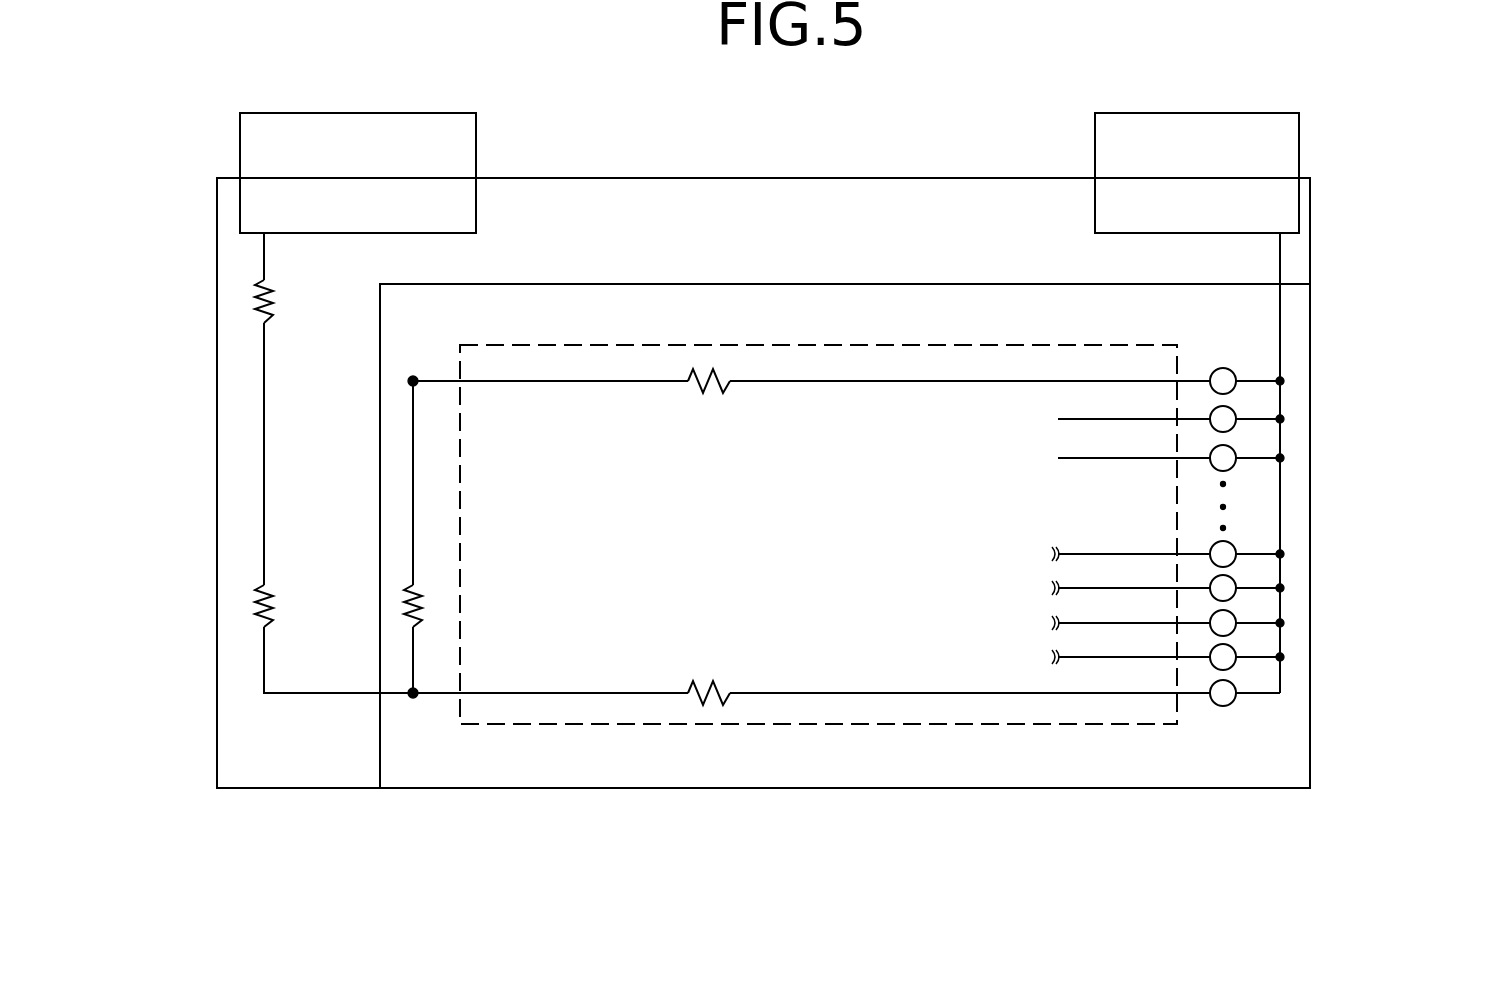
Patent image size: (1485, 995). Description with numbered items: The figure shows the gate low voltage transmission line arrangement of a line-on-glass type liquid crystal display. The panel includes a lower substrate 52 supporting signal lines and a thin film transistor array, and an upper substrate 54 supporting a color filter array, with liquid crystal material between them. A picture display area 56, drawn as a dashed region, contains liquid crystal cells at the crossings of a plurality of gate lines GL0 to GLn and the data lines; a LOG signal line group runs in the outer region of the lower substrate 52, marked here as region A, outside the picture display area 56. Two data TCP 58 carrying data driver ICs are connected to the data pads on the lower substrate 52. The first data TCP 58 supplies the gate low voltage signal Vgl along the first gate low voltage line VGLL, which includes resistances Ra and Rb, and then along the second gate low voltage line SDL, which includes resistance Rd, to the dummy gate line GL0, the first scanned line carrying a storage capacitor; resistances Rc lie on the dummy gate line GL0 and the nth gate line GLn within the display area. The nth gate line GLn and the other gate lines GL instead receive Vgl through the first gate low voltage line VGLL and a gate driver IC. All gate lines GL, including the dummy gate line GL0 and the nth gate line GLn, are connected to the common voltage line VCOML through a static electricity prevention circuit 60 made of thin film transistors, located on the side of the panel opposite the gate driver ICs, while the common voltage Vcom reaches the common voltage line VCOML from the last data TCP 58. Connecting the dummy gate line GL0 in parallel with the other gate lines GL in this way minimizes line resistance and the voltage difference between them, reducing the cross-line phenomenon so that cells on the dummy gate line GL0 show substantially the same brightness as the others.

The lower substrate 52 is at (1310, 228).
The upper substrate 54 is at (1310, 372).
The picture display area 56 is at (762, 535).
The data TCP 58 is at (477, 113).
The static electricity prevention circuit 60 is at (1227, 697).
The region A is at (180, 216).
The resistor Ra is at (291, 301).
The resistor Rb is at (291, 606).
The resistor Rc is at (707, 537).
The resistor Rd is at (438, 606).
The first gate low voltage line VGLL is at (264, 412).
The second gate low voltage line SDL is at (413, 453).
The dummy gate line GL0 is at (892, 381).
The nth gate line GLn is at (887, 690).
The gate lines GL is at (1085, 554).
The common voltage line VCOML is at (1280, 507).